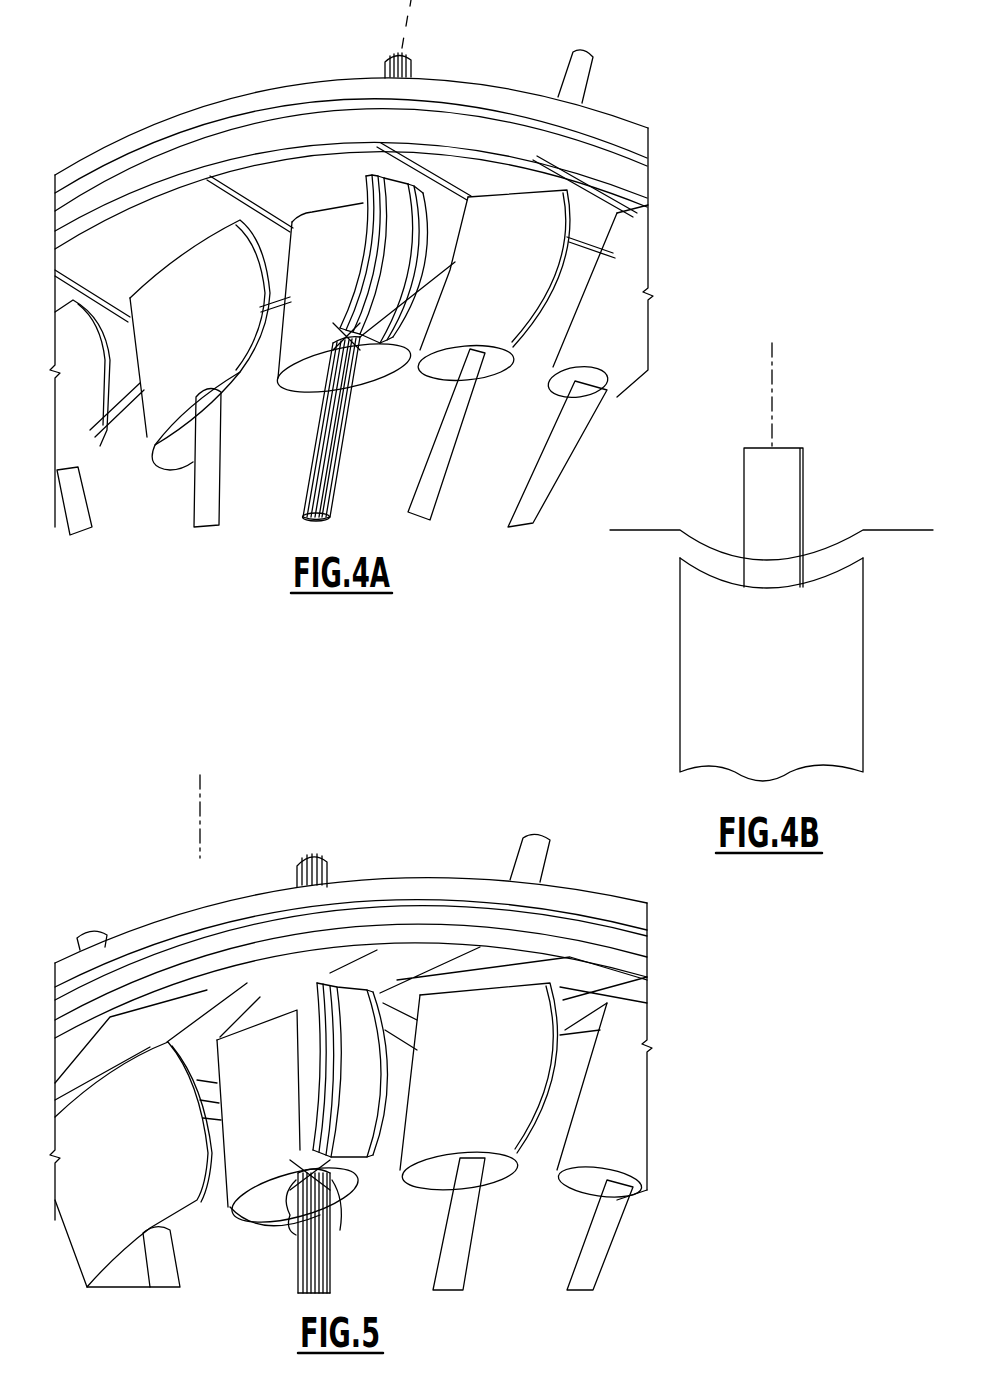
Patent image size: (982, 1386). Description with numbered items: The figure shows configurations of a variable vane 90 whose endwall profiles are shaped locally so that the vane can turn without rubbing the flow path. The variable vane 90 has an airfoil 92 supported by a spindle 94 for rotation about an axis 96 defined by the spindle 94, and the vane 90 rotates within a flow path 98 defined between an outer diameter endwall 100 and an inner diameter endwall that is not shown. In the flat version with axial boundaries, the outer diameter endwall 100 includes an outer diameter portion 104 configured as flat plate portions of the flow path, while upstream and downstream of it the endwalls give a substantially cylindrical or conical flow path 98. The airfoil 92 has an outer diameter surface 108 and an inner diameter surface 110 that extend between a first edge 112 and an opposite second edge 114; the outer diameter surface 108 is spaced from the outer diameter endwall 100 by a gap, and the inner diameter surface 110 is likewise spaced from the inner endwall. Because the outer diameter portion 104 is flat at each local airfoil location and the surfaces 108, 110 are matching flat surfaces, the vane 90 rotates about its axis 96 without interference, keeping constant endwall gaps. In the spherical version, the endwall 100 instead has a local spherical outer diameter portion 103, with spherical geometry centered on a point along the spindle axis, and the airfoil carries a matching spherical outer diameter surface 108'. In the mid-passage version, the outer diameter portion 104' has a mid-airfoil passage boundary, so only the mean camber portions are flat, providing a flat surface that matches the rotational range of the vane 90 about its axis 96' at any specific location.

In FIG. 4A, the variable vane 90 is at (233, 386).
In FIG. 5, the variable vane 90 is at (229, 1229).
In FIG. 4A, the airfoil 92 is at (295, 217).
In FIG. 4B, the airfoil 92 is at (688, 665).
In FIG. 5, the airfoil 92 is at (243, 1060).
In FIG. 4A, the spindle 94 is at (307, 487).
In FIG. 4B, the spindle 94 is at (806, 457).
In FIG. 5, the spindle 94 is at (333, 1272).
In FIG. 4A, the axis 96 is at (430, 39).
In FIG. 4B, the axis 96 is at (807, 388).
In FIG. 5, the axis 96' is at (298, 831).
In FIG. 4A, the flow path 98 is at (638, 410).
In FIG. 4A, the outer diameter endwall 100 is at (612, 187).
In FIG. 5, the outer diameter endwall 100 is at (613, 940).
In FIG. 4B, the outer diameter portion 103 is at (705, 548).
In FIG. 4A, the outer diameter portion 104 is at (318, 141).
In FIG. 5, the outer diameter portion 104' is at (369, 923).
In FIG. 4A, the outer diameter surface 108 is at (337, 203).
In FIG. 5, the outer diameter surface 108 is at (311, 1070).
In FIG. 4B, the outer diameter surface 108' is at (787, 539).
In FIG. 4A, the inner diameter surface 110 is at (372, 410).
In FIG. 5, the inner diameter surface 110 is at (253, 1223).
In FIG. 4A, the first edge 112 is at (155, 468).
In FIG. 4A, the second edge 114 is at (516, 349).
In FIG. 5, the second edge 114 is at (523, 1092).